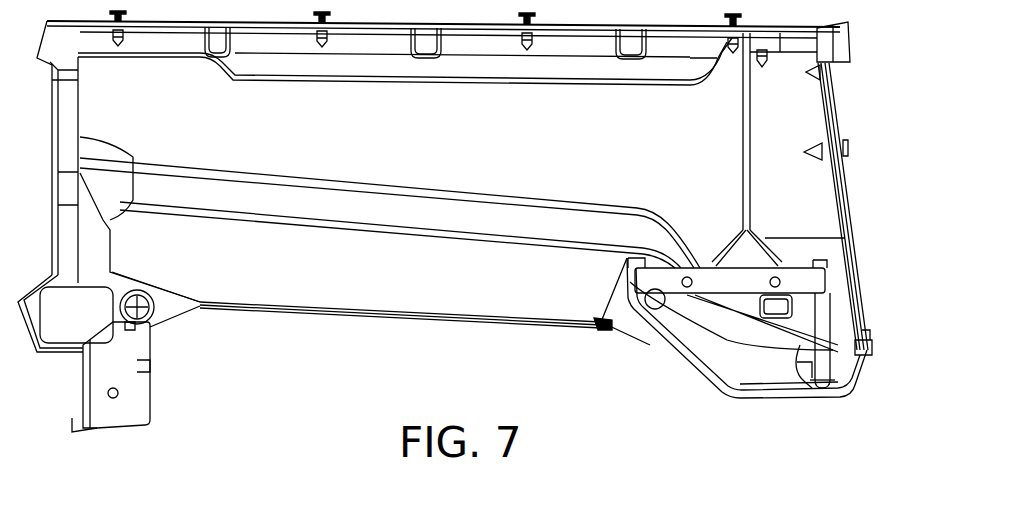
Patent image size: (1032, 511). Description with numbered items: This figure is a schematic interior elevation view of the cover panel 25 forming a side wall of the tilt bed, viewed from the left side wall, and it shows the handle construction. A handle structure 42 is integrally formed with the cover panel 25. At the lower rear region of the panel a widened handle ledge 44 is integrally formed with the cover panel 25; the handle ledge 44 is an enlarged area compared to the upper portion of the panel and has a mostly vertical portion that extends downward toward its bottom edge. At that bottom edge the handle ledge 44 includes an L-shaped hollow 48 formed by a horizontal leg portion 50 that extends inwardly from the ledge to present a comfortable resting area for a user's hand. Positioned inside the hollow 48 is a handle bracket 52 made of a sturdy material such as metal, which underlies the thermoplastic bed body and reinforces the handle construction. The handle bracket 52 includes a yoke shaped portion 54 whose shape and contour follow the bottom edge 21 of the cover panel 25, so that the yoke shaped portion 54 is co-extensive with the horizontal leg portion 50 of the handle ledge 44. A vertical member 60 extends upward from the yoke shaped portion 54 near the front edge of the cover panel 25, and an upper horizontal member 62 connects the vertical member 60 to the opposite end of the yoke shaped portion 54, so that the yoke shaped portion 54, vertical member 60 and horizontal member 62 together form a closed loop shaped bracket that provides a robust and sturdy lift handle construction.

The cover panel 25 is at (388, 137).
The upper horizontal member 62 is at (745, 278).
The vertical member 60 is at (823, 312).
The handle ledge 44 is at (862, 372).
The handle bracket 52 is at (601, 327).
The L-shaped hollow 48 is at (733, 347).
The bottom edge 21 is at (713, 385).
The yoke shaped portion 54 is at (763, 387).
The horizontal leg portion 50 is at (817, 403).
The handle structure 42 is at (868, 399).